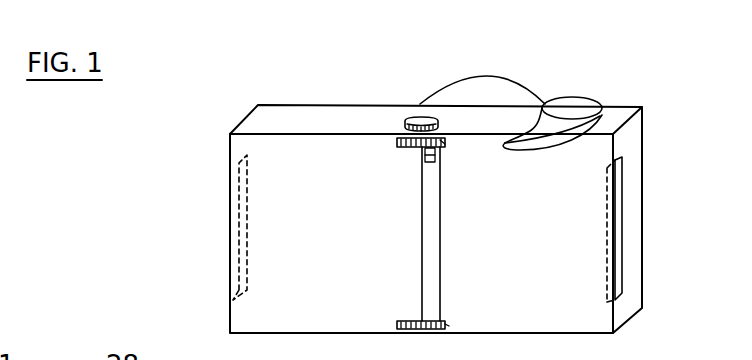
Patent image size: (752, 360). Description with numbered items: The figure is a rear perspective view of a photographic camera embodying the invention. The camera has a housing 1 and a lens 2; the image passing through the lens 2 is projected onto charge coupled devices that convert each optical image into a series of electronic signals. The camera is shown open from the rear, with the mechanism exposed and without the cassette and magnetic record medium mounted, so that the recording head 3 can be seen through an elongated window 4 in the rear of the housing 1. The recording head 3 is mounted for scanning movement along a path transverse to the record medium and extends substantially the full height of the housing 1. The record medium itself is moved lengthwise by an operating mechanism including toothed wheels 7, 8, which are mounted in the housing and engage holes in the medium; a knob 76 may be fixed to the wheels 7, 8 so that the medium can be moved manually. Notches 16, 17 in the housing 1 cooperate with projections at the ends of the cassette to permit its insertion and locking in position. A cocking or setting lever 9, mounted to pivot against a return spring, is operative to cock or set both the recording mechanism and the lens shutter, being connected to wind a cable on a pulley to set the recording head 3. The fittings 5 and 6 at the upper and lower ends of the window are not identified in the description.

The housing 1 is at (344, 99).
The lens 2 is at (519, 90).
The recording head 3 is at (422, 155).
The elongated window 4 is at (433, 245).
The upper nut 5 is at (400, 146).
The lower nut 6 is at (400, 318).
The toothed wheel 7 is at (445, 142).
The toothed wheel 8 is at (449, 325).
The cocking or setting lever 9 is at (578, 127).
The notch 16 is at (230, 218).
The notch 17 is at (615, 213).
The knob 76 is at (418, 117).